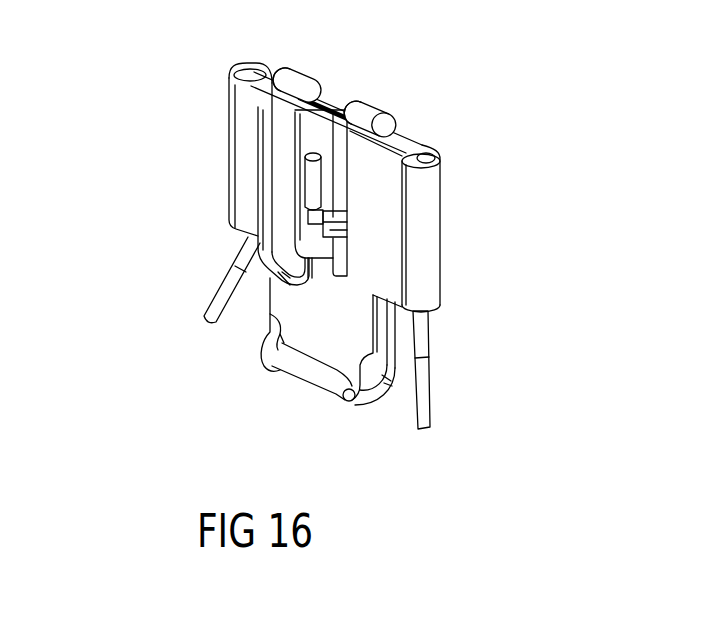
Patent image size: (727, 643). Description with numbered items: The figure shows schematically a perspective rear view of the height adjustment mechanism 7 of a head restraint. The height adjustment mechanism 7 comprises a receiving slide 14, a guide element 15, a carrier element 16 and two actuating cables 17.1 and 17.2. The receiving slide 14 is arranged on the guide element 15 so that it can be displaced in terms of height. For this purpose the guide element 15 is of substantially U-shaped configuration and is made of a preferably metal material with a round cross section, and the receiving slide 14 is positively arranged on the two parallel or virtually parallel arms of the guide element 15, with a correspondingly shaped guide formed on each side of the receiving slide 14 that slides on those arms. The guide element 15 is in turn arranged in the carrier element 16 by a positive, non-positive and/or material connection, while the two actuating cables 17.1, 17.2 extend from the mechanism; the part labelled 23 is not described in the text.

The height adjustment mechanism 7 is at (470, 56).
The receiving slide 14 is at (318, 128).
The guide element 15 is at (368, 400).
The carrier element 16 is at (248, 150).
The actuating cable 17.1 is at (422, 343).
The actuating cable 17.2 is at (217, 297).
The bar 23 is at (302, 378).